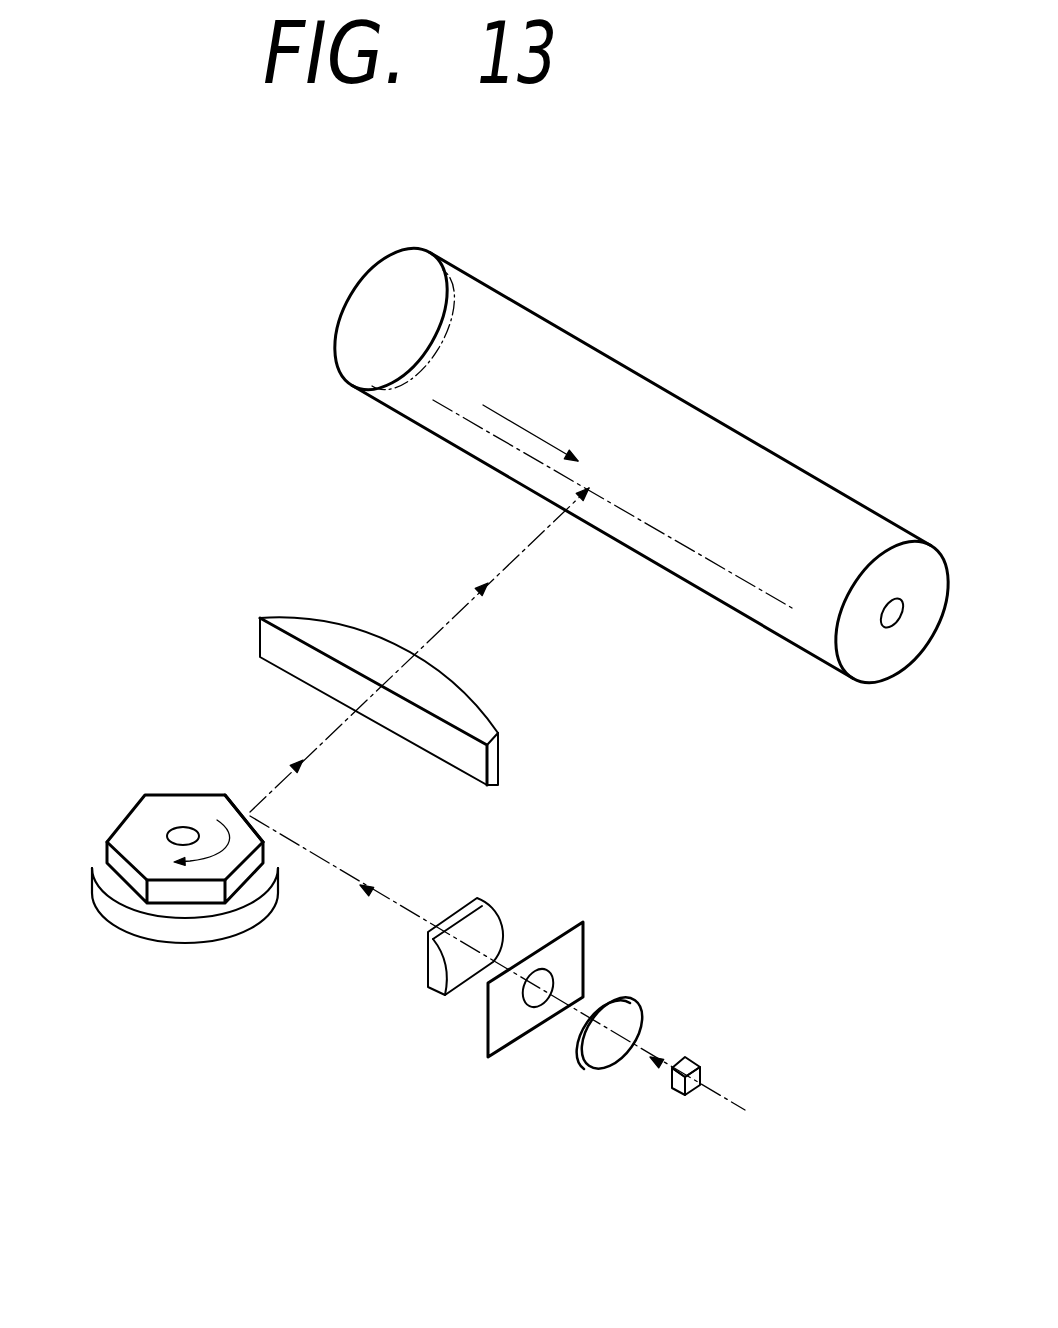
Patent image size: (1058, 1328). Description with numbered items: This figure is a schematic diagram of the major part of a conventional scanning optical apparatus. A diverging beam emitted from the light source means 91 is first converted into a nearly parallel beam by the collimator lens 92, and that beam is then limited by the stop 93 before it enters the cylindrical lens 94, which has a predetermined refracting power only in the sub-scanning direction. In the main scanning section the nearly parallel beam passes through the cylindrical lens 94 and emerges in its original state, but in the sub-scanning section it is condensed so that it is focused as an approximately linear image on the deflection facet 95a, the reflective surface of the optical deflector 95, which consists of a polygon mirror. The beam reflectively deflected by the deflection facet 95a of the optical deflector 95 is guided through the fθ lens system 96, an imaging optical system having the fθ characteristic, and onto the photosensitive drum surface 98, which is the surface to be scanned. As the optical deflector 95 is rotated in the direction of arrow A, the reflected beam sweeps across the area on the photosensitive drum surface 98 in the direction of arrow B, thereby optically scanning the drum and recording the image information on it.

The light source means 91 is at (673, 1093).
The collimator lens 92 is at (597, 1055).
The stop 93 is at (500, 1012).
The cylindrical lens 94 is at (437, 965).
The optical deflector 95 is at (130, 825).
The deflection facet 95a is at (240, 803).
The fθ lens system 96 is at (335, 630).
The photosensitive drum surface 98 is at (773, 637).
The direction of rotation of optical deflector A is at (205, 857).
The scanning direction B is at (507, 420).